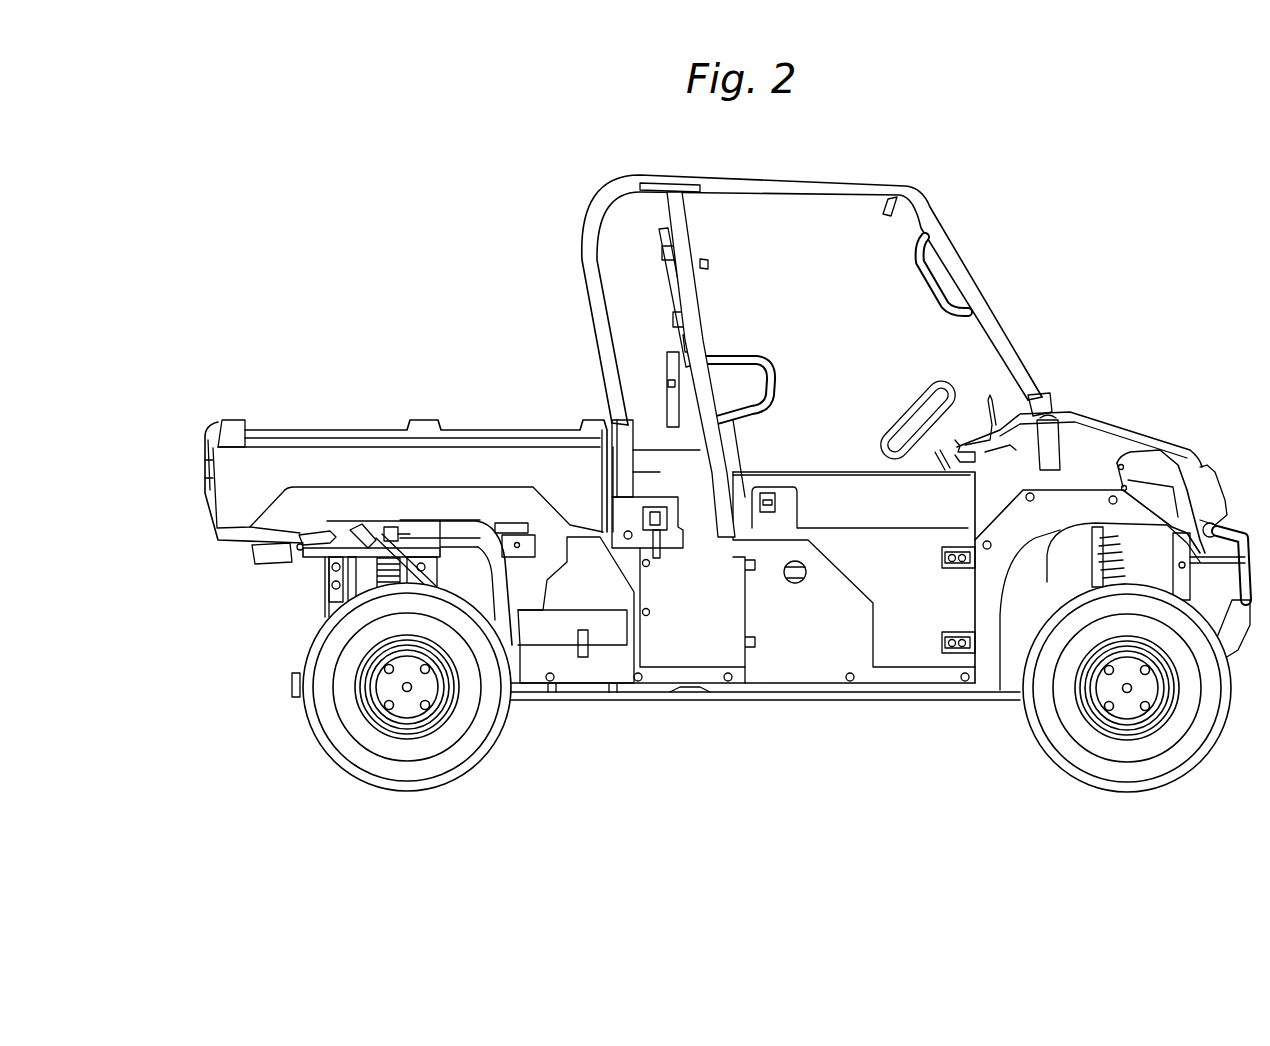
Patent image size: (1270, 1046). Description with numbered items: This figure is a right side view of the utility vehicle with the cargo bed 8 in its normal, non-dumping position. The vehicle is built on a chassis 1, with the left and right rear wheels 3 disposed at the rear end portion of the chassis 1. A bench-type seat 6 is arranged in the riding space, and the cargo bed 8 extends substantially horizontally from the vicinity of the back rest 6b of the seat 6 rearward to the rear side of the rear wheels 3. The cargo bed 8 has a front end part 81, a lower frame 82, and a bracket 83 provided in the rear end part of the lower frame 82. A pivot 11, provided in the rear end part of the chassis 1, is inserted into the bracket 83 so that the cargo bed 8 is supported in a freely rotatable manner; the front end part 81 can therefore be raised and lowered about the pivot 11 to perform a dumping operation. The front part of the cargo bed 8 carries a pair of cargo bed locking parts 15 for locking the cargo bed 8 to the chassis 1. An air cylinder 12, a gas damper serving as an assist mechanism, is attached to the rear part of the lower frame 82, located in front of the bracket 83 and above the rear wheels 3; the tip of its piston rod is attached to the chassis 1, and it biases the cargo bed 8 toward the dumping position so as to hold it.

The chassis 1 is at (316, 597).
The rear wheels 3 is at (340, 768).
The seat 6 is at (759, 441).
The back rest 6b is at (728, 428).
The cargo bed 8 is at (299, 419).
The front end part 81 is at (673, 424).
The lower frame 82 is at (350, 528).
The bracket 83 is at (322, 530).
The pivot 11 is at (300, 547).
The air cylinder 12 is at (380, 542).
The cargo bed locking parts 15 is at (662, 575).